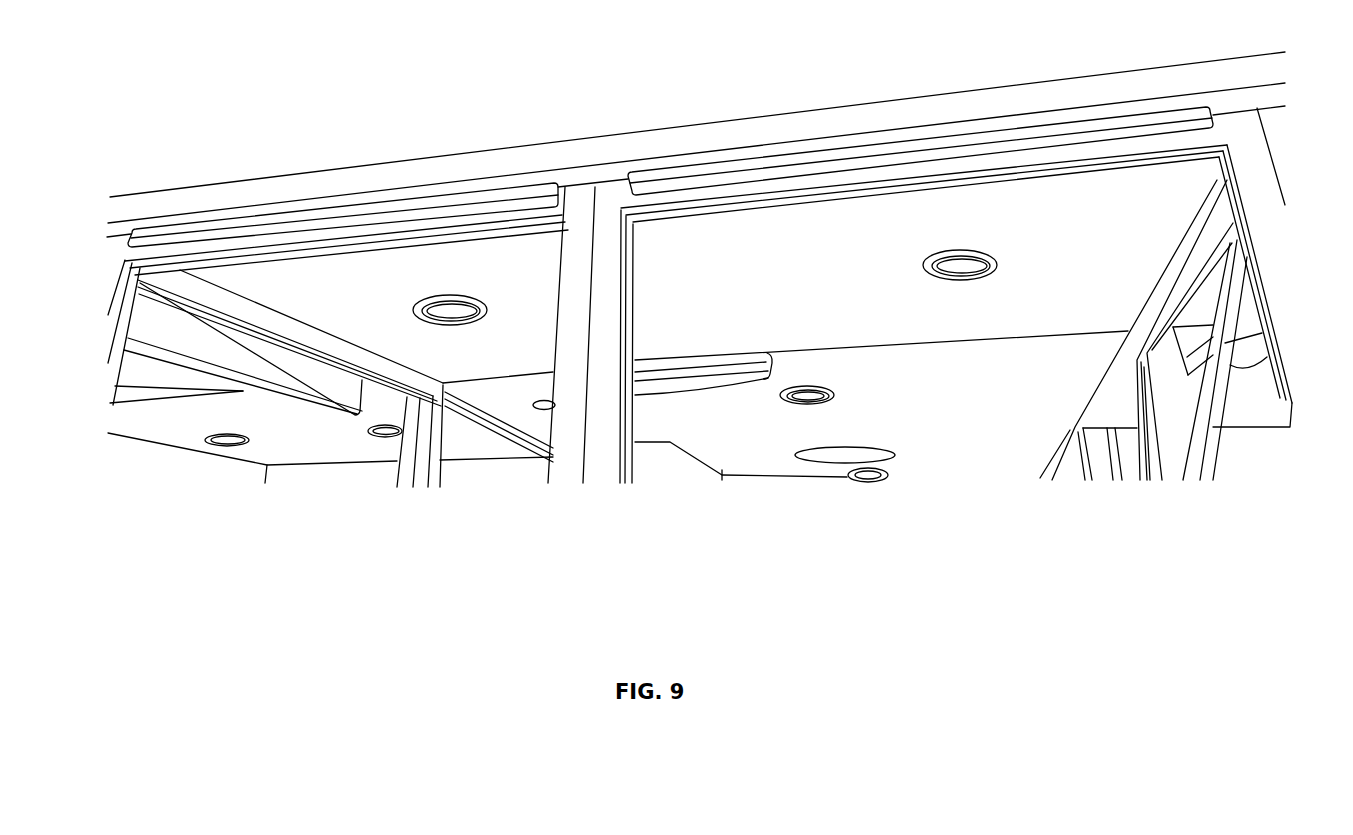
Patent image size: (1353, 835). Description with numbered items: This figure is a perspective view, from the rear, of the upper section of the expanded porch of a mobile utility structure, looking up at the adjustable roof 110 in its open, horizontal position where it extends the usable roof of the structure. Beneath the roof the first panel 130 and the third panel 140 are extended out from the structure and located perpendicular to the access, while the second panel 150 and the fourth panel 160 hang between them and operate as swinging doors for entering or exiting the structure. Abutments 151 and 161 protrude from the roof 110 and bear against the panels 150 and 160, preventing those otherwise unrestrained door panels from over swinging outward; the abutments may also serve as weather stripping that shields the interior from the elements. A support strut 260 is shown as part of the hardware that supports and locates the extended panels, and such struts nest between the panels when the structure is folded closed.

The adjustable roof 110 is at (236, 200).
The first panel 130 is at (277, 318).
The third panel 140 is at (1193, 213).
The second panel 150 is at (562, 448).
The abutment 151 is at (372, 210).
The fourth panel 160 is at (600, 445).
The abutment 161 is at (957, 146).
The support strut 260 is at (1225, 343).